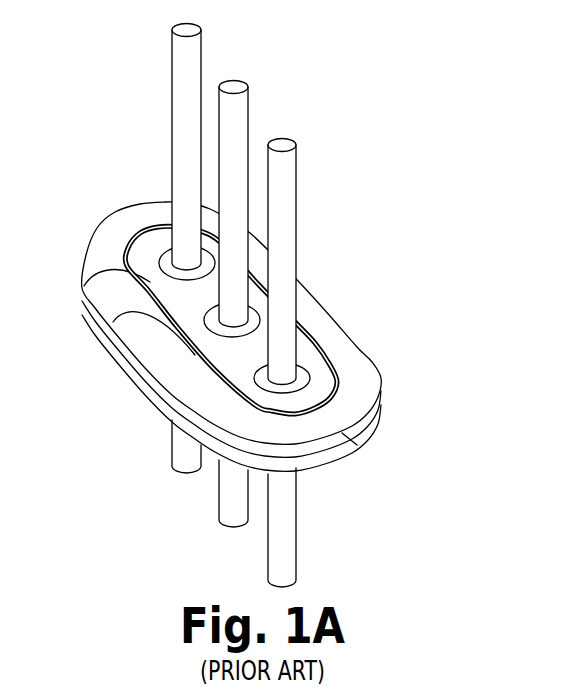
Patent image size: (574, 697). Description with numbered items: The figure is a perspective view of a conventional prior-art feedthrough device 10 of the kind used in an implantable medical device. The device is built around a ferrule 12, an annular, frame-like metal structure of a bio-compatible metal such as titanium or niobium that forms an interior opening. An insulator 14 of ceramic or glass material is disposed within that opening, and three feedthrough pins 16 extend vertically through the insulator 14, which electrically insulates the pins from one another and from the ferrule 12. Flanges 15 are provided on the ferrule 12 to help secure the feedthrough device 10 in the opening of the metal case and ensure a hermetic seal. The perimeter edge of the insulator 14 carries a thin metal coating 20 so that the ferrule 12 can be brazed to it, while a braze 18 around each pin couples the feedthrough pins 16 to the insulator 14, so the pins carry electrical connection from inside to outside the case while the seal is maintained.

The feedthrough device 10 is at (424, 102).
The ferrule 12 is at (367, 378).
The insulator 14 is at (83, 288).
The flanges 15 is at (348, 437).
The feedthrough pins 16 is at (190, 47).
The braze 18 is at (132, 238).
The metal coating 20 is at (102, 330).